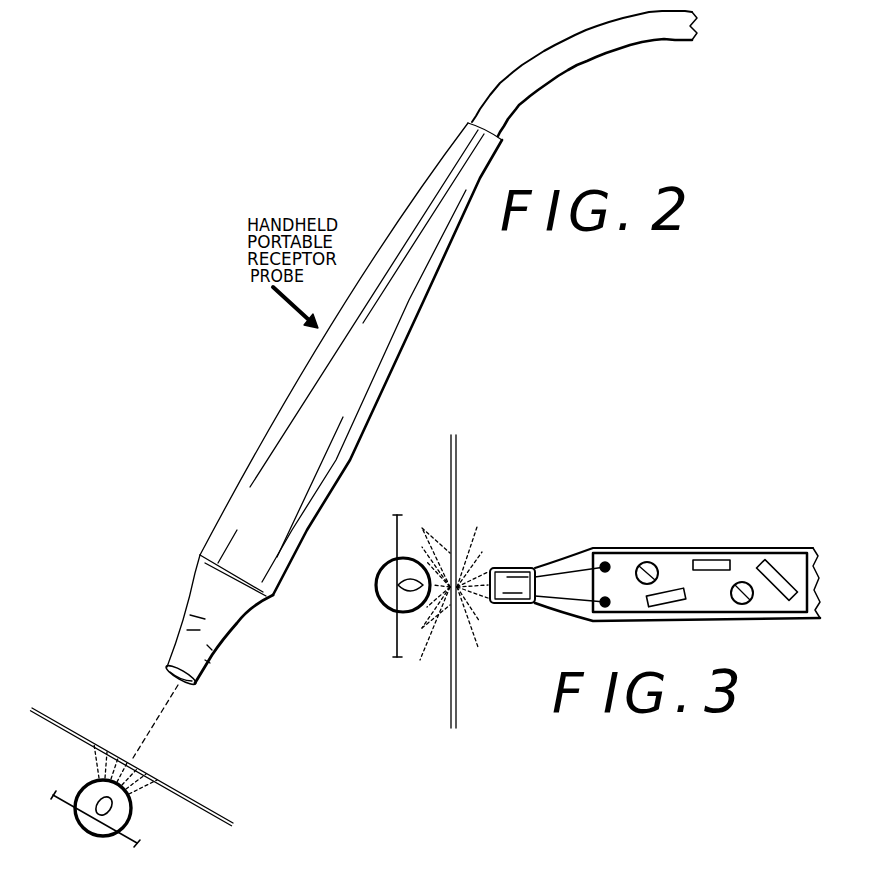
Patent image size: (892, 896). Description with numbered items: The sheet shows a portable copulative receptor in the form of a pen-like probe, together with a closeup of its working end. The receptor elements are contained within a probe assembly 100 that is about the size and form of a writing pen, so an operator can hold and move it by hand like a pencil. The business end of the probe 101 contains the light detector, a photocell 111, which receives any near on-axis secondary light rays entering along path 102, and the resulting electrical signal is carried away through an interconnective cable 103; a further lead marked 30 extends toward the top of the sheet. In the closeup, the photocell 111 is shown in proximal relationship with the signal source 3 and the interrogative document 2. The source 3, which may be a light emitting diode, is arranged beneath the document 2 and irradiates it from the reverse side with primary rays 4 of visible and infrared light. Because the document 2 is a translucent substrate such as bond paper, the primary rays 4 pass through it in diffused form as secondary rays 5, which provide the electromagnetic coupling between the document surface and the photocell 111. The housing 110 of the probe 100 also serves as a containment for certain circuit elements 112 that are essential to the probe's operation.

In FIG. 2, the interrogative document 2 is at (202, 798).
In FIG. 3, the interrogative document 2 is at (457, 473).
In FIG. 2, the signal source 3 is at (83, 786).
In FIG. 3, the signal source 3 is at (394, 594).
In FIG. 3, the primary rays 4 is at (430, 532).
In FIG. 3, the secondary rays 5 is at (477, 550).
In FIG. 2, the instrument 30 is at (350, 0).
In FIG. 2, the probe assembly 100 is at (411, 233).
In FIG. 2, the business end of the probe 101 is at (184, 640).
In FIG. 2, the path 102 is at (147, 738).
In FIG. 2, the interconnective cable 103 is at (566, 60).
In FIG. 3, the housing 110 is at (628, 542).
In FIG. 3, the photocell 111 is at (509, 582).
In FIG. 3, the circuit elements 112 is at (754, 561).